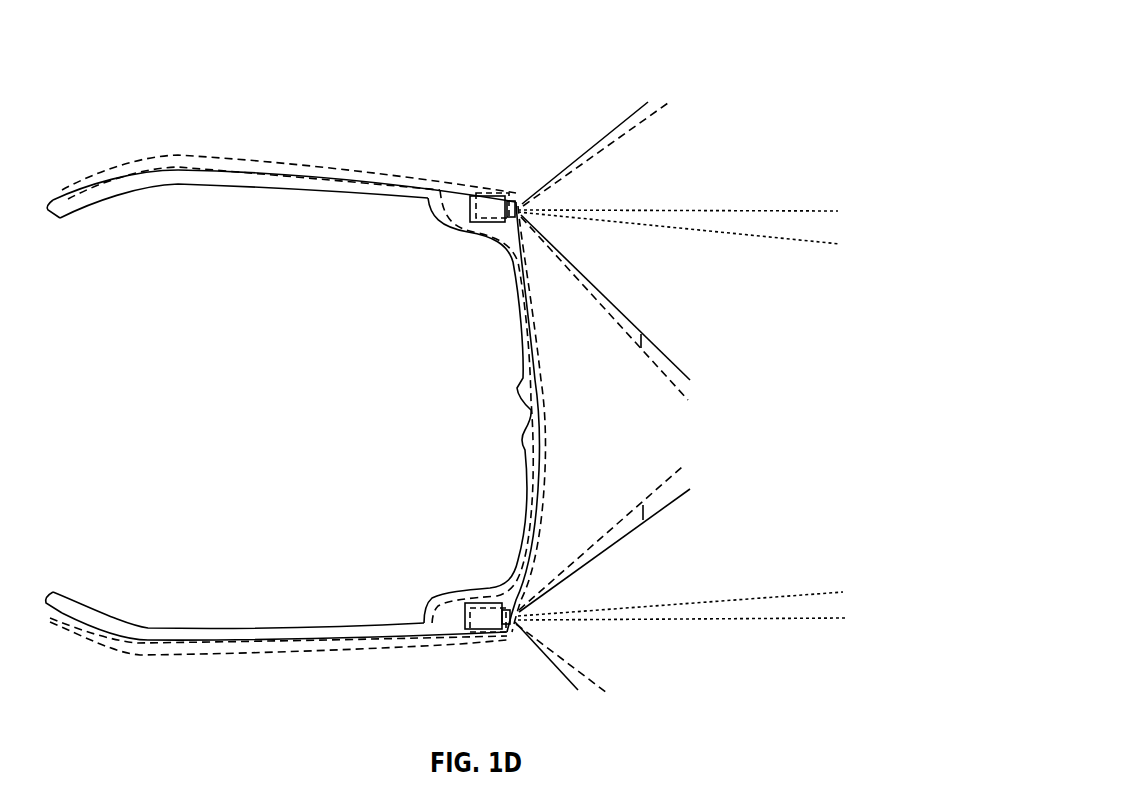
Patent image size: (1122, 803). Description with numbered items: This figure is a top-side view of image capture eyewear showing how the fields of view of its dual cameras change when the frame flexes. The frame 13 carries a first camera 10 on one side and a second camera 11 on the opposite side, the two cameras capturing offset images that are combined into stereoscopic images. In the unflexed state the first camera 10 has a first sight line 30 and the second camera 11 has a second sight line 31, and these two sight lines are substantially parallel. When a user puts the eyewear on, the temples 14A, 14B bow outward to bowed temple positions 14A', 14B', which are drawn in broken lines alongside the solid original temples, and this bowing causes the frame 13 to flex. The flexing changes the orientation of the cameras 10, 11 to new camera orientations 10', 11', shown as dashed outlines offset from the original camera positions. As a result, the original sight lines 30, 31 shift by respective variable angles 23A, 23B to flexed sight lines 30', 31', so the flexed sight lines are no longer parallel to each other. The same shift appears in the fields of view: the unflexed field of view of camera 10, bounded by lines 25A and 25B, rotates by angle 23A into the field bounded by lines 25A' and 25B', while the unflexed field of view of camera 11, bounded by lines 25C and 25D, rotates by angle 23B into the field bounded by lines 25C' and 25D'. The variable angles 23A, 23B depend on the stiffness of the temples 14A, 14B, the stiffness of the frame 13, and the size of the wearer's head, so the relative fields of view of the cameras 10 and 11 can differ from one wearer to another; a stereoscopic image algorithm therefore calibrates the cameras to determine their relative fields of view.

The first camera 10 is at (446, 566).
The new camera orientation 10' is at (375, 677).
The second camera 11 is at (410, 179).
The new camera orientation 11' is at (503, 151).
The frame 13 is at (520, 453).
The temple 14A is at (276, 588).
The bowed temple position 14A' is at (277, 679).
The temple 14B is at (281, 226).
The bowed temple position 14B' is at (289, 134).
The variable angle 23A is at (636, 513).
The variable angle 23B is at (640, 340).
The field of view line 25A is at (474, 681).
The flexed field of view line 25A' is at (645, 680).
The field of view line 25B is at (690, 550).
The flexed field of view line 25B' is at (697, 509).
The field of view line 25C is at (665, 297).
The flexed field of view line 25C' is at (724, 309).
The field of view line 25D is at (679, 103).
The flexed field of view line 25D' is at (674, 156).
The first sight line 30 is at (715, 686).
The flexed sight line 30' is at (739, 519).
The second sight line 31 is at (734, 117).
The flexed sight line 31' is at (734, 254).